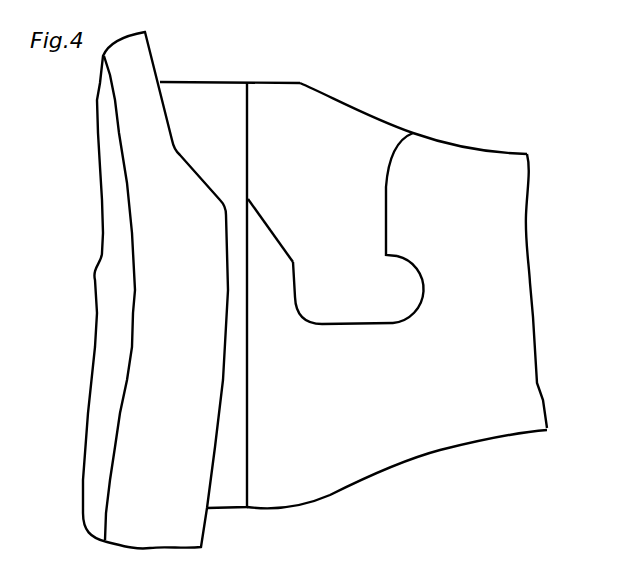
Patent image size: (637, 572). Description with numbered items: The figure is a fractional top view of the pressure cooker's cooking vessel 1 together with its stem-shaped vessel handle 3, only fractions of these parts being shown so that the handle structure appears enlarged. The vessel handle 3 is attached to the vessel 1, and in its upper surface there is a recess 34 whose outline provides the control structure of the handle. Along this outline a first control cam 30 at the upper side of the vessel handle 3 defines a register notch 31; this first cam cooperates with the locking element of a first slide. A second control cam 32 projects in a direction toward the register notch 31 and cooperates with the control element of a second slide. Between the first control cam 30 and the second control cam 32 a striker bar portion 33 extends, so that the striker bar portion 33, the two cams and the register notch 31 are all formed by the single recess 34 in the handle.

The cooking vessel 1 is at (100, 402).
The vessel handle 3 is at (512, 212).
The first control cam 30 is at (390, 195).
The register notch 31 is at (415, 312).
The second control cam 32 is at (272, 233).
The striker bar portion 33 is at (349, 327).
The recess 34 is at (338, 108).